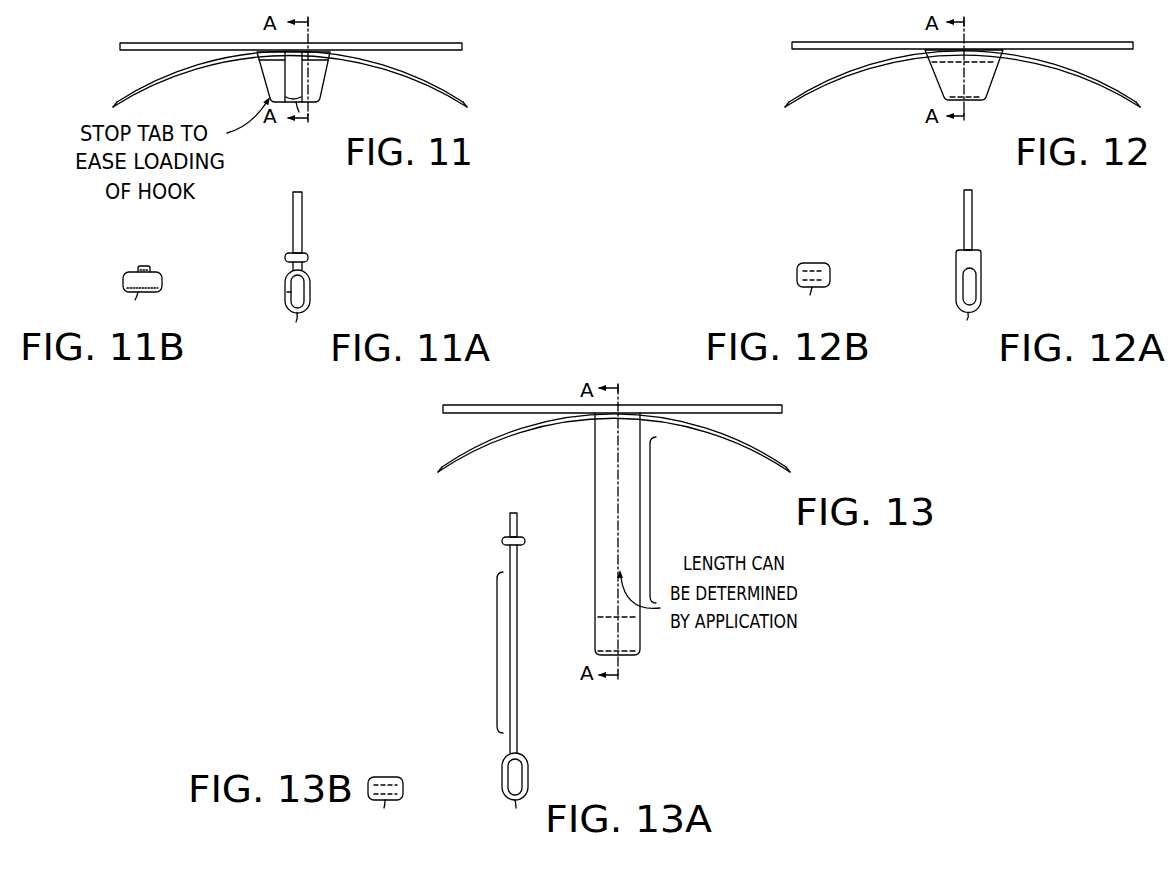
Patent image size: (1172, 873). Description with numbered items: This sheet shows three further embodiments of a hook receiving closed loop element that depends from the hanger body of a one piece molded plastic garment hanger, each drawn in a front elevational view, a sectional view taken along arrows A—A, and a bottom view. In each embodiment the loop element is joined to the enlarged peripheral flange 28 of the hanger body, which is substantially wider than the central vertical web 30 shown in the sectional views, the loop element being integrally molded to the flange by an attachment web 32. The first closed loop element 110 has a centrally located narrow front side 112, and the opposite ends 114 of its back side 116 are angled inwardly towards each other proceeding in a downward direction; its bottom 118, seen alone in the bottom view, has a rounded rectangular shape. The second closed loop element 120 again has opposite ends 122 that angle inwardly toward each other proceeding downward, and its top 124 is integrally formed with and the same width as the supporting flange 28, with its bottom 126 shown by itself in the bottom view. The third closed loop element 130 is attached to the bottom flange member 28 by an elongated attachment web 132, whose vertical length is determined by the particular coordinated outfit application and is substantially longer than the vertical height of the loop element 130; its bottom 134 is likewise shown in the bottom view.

In FIG. 11, the peripheral flange 28 is at (308, 48).
In FIG. 11A, the peripheral flange 28 is at (306, 261).
In FIG. 12, the peripheral flange 28 is at (981, 48).
In FIG. 12A, the peripheral flange 28 is at (980, 256).
In FIG. 13, the peripheral flange 28 is at (632, 412).
In FIG. 13A, the peripheral flange 28 is at (505, 548).
In FIG. 11A, the vertical web 30 is at (302, 227).
In FIG. 12A, the vertical web 30 is at (970, 198).
In FIG. 13A, the vertical web 30 is at (507, 531).
In FIG. 11A, the attachment web 32 is at (308, 266).
In FIG. 11, the hook receiving closed loop element 110 is at (256, 82).
In FIG. 11A, the hook receiving closed loop element 110 is at (271, 273).
In FIG. 11B, the hook receiving closed loop element 110 is at (127, 264).
In FIG. 11, the narrow front side 112 is at (305, 90).
In FIG. 11A, the narrow front side 112 is at (288, 292).
In FIG. 11, the opposite ends 114 is at (276, 72).
In FIG. 11, the back side 116 is at (268, 83).
In FIG. 11A, the back side 116 is at (312, 290).
In FIG. 13A, the back side 116 is at (530, 775).
In FIG. 11, the bottom 118 is at (300, 103).
In FIG. 11A, the bottom 118 is at (298, 318).
In FIG. 11B, the bottom 118 is at (138, 293).
In FIG. 12, the hook receiving closed loop element 120 is at (927, 81).
In FIG. 12A, the hook receiving closed loop element 120 is at (940, 272).
In FIG. 12B, the hook receiving closed loop element 120 is at (798, 260).
In FIG. 12, the opposite ends 122 is at (930, 70).
In FIG. 12A, the top 124 is at (983, 285).
In FIG. 12, the bottom 126 is at (972, 103).
In FIG. 12A, the bottom 126 is at (971, 313).
In FIG. 12B, the bottom 126 is at (812, 290).
In FIG. 13, the hook receiving closed loop element 130 is at (653, 541).
In FIG. 13A, the hook receiving closed loop element 130 is at (489, 672).
In FIG. 13B, the hook receiving closed loop element 130 is at (388, 765).
In FIG. 13, the elongated attachment web 132 is at (652, 516).
In FIG. 13A, the elongated attachment web 132 is at (497, 652).
In FIG. 13, the bottom 134 is at (622, 660).
In FIG. 13A, the bottom 134 is at (518, 800).
In FIG. 13B, the bottom 134 is at (385, 800).